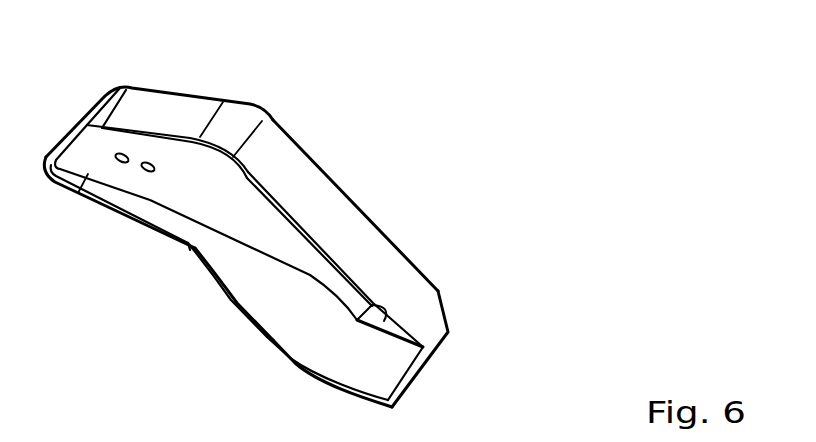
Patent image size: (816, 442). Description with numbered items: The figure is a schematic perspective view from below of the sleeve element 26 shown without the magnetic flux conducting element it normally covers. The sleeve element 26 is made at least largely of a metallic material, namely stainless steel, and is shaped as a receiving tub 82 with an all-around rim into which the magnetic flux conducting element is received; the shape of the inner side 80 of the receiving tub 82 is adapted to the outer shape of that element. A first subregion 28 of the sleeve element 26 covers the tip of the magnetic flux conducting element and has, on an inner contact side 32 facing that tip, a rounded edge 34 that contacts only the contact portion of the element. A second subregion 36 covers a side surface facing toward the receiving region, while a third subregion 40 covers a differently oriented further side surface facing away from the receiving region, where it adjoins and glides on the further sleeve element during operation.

The sleeve element 26 is at (297, 187).
The first subregion 28 is at (418, 373).
The inner contact side 32 is at (373, 302).
The rounded edge 34 is at (385, 320).
The second subregion 36 is at (317, 341).
The third subregion 40 is at (157, 116).
The inner side 80 is at (236, 195).
The receiving tub 82 is at (292, 278).